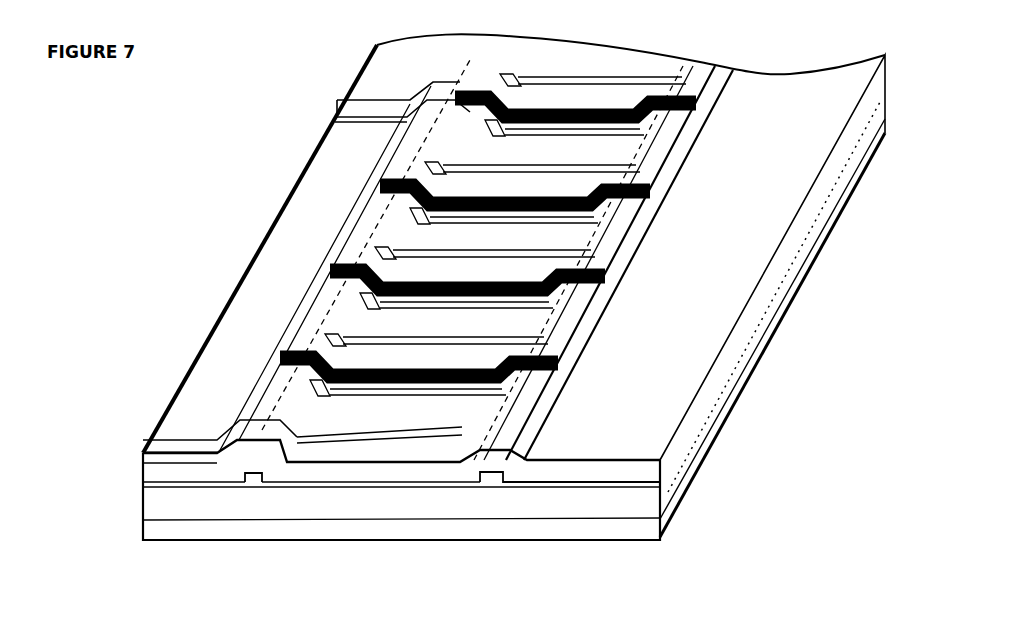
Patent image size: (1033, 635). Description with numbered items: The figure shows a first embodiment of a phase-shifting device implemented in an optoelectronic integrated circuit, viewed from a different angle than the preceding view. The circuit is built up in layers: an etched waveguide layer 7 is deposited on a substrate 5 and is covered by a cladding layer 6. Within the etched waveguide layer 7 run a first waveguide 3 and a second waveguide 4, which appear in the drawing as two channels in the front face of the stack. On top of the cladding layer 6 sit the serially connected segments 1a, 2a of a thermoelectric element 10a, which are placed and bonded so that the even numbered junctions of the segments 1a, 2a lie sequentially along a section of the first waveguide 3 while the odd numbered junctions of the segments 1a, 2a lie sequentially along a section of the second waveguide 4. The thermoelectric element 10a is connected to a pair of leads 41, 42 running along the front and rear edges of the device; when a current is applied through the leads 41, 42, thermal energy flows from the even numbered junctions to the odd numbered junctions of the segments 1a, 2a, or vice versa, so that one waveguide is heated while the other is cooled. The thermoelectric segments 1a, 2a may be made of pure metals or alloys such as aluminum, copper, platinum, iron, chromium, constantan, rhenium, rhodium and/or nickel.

The segment 1a is at (282, 400).
The segment 2a is at (296, 330).
The first waveguide 3 is at (250, 483).
The second waveguide 4 is at (490, 478).
The substrate 5 is at (175, 532).
The cladding layer 6 is at (562, 478).
The etched waveguide layer 7 is at (310, 483).
The thermoelectric element 10a is at (332, 231).
The lead 41 is at (172, 443).
The lead 42 is at (368, 110).